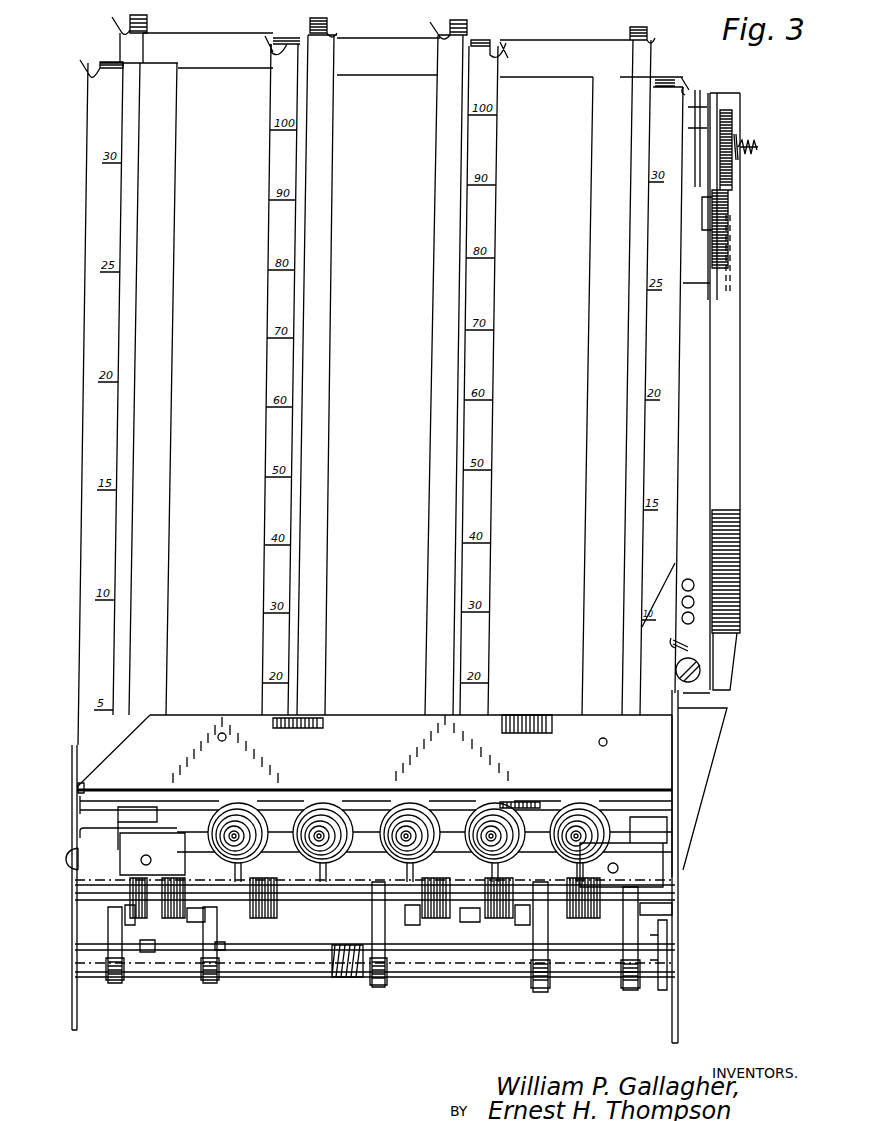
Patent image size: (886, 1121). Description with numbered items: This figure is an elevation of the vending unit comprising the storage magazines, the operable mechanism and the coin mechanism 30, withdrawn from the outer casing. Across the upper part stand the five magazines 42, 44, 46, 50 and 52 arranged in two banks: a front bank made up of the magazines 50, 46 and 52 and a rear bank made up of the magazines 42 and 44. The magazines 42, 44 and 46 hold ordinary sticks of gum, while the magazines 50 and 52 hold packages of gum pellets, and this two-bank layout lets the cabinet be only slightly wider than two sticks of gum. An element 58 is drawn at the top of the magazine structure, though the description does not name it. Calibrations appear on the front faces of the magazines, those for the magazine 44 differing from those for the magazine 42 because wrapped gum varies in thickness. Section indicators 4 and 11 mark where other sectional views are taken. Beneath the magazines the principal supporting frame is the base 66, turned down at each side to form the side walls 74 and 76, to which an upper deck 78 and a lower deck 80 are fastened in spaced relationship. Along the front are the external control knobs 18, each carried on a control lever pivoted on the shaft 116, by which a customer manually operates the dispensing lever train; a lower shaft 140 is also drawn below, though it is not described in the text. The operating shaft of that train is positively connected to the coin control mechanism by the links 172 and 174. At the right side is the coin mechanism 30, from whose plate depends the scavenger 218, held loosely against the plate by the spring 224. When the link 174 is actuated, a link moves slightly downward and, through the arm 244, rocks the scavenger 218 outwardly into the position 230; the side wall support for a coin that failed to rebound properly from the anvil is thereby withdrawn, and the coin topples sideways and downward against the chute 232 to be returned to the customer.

The magazine 50 is at (118, 68).
The guide column 58 is at (158, 44).
The magazine 42 is at (220, 88).
The magazine 46 is at (375, 95).
The magazine 44 is at (555, 100).
The magazine 52 is at (643, 101).
The section line 11- 11 is at (687, 92).
The section line 4- 4 is at (50, 699).
The arm 244 is at (708, 93).
The spring 224 is at (745, 138).
The scavenger 218 is at (730, 214).
The outward position of scavenger 230 is at (735, 256).
The coin mechanism 30 is at (725, 419).
The chute 232 is at (738, 561).
The base 66 is at (72, 774).
The upper deck 78 is at (84, 810).
The lower deck 80 is at (80, 838).
The shaft 116 is at (76, 876).
The side wall 74 is at (75, 902).
The lower shaft 140 is at (265, 978).
The knob 18 is at (410, 805).
The link 174 is at (678, 910).
The side wall 76 is at (678, 974).
The link 172 is at (662, 985).